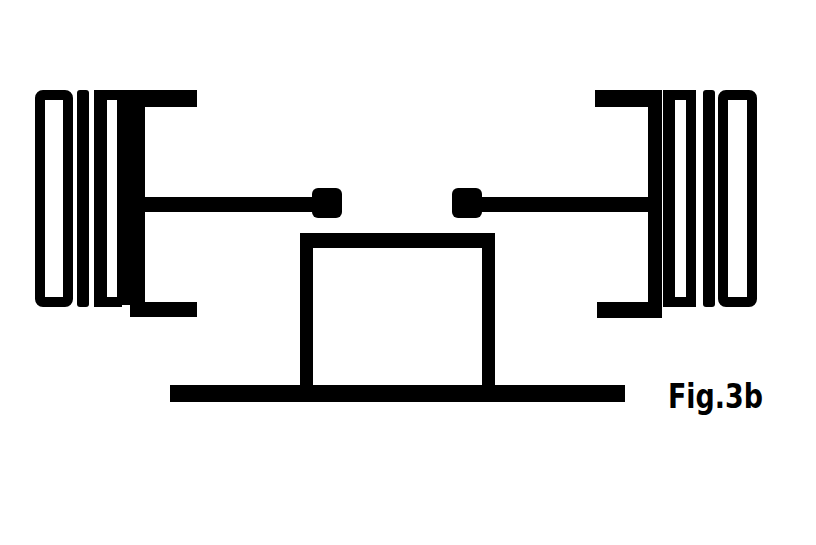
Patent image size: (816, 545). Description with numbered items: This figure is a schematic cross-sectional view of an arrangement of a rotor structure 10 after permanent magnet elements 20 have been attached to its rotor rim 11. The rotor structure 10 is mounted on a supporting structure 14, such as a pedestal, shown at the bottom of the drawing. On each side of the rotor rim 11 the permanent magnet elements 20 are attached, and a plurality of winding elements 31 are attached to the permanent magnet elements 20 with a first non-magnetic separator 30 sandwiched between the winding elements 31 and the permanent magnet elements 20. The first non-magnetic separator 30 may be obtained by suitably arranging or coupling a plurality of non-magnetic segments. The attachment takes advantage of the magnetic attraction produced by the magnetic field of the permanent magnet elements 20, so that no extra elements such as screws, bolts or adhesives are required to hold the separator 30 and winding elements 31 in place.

The rotor structure 10 is at (358, 197).
The rotor rim 11 is at (132, 312).
The supporting structure 14 is at (380, 408).
The permanent magnet elements 20 is at (110, 117).
The first non-magnetic separator 30 is at (83, 90).
The winding elements 31 is at (52, 115).